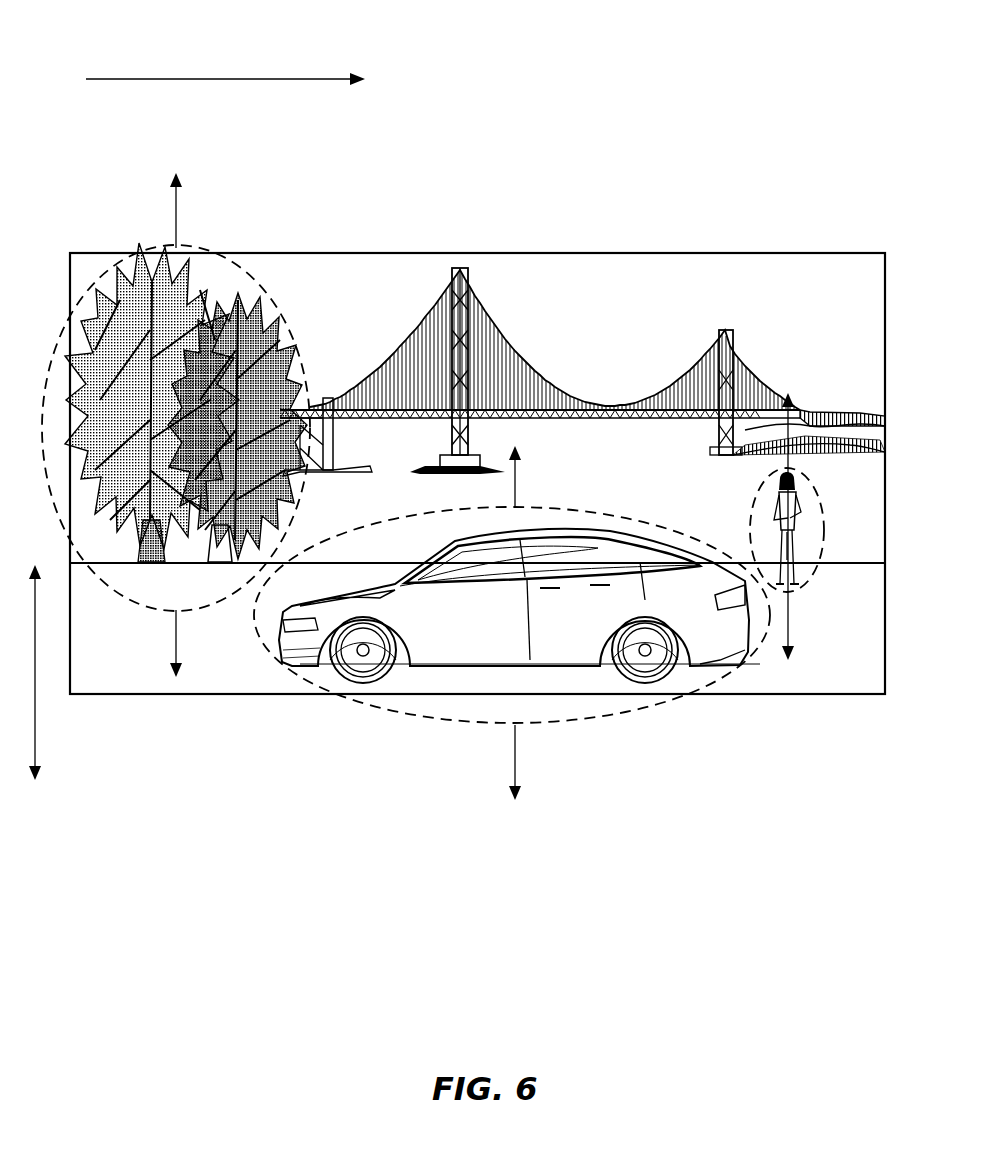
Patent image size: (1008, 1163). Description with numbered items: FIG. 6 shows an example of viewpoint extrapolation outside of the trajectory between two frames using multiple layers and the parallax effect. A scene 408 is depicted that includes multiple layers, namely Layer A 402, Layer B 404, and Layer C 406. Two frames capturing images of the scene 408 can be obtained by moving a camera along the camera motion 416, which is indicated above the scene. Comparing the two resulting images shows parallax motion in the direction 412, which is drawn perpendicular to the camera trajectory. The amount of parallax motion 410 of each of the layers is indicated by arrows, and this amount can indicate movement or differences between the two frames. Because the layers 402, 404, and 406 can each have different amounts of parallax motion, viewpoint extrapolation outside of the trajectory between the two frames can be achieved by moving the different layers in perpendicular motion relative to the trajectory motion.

The Layer A 402 is at (593, 720).
The Layer B 404 is at (268, 285).
The Layer C 406 is at (818, 583).
The scene 408 is at (477, 473).
The amount of parallax motion 410 is at (547, 885).
The direction of parallax motion 412 is at (35, 712).
The camera motion 416 is at (225, 63).